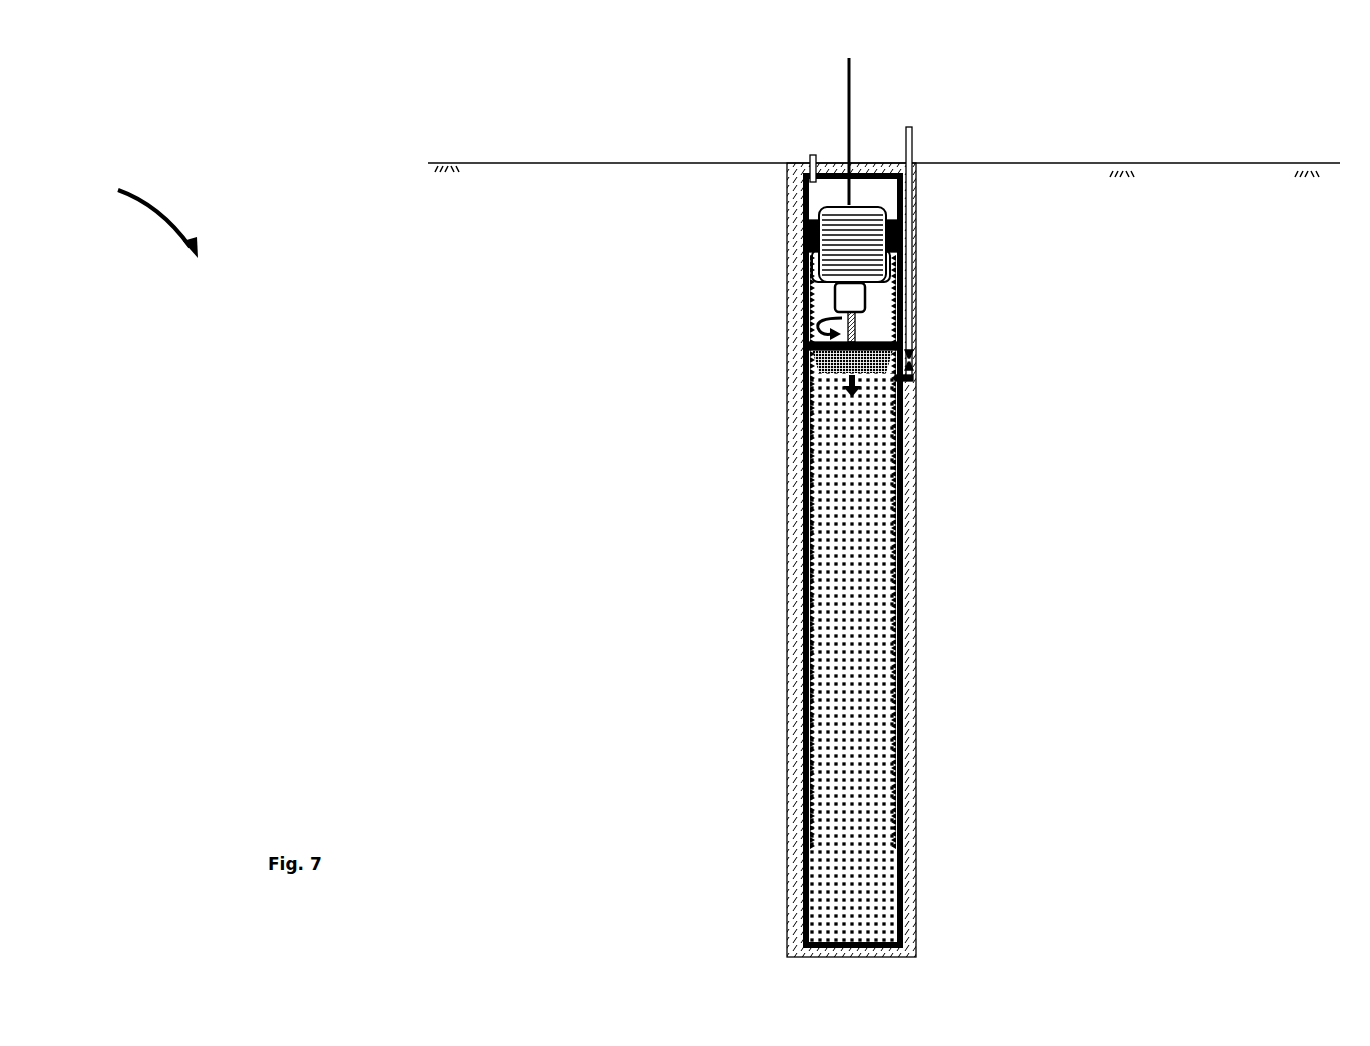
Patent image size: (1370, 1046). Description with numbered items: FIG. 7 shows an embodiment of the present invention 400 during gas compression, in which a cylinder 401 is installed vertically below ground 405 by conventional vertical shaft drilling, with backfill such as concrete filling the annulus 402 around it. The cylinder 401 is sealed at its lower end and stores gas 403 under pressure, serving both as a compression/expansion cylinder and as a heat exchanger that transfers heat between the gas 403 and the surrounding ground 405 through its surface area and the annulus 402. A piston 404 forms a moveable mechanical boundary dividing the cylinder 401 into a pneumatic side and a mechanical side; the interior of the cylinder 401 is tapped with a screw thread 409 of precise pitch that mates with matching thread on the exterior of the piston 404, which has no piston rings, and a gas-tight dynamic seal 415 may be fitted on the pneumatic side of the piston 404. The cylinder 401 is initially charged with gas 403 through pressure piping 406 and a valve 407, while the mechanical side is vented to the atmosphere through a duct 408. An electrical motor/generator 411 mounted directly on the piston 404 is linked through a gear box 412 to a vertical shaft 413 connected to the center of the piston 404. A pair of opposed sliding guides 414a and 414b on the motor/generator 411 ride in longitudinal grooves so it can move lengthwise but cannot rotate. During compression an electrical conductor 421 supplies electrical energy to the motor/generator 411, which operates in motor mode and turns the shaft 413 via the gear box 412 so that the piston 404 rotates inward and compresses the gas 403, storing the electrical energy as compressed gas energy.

The embodiment of the present invention 400 is at (188, 236).
The cylinder 401 is at (803, 773).
The annulus 402 is at (798, 895).
The gas 403 is at (878, 765).
The piston 404 is at (890, 375).
The ground 405 is at (1160, 165).
The pressure piping 406 is at (912, 131).
The valve 407 is at (912, 362).
The duct 408 is at (811, 155).
The screw thread 409 is at (812, 592).
The electrical motor/generator 411 is at (820, 205).
The gear box 412 is at (858, 290).
The vertical shaft 413 is at (857, 320).
The sliding guide 414a is at (809, 228).
The sliding guide 414b is at (897, 228).
The gas-tight dynamic seal 415 is at (825, 375).
The electrical conductor 421 is at (851, 98).